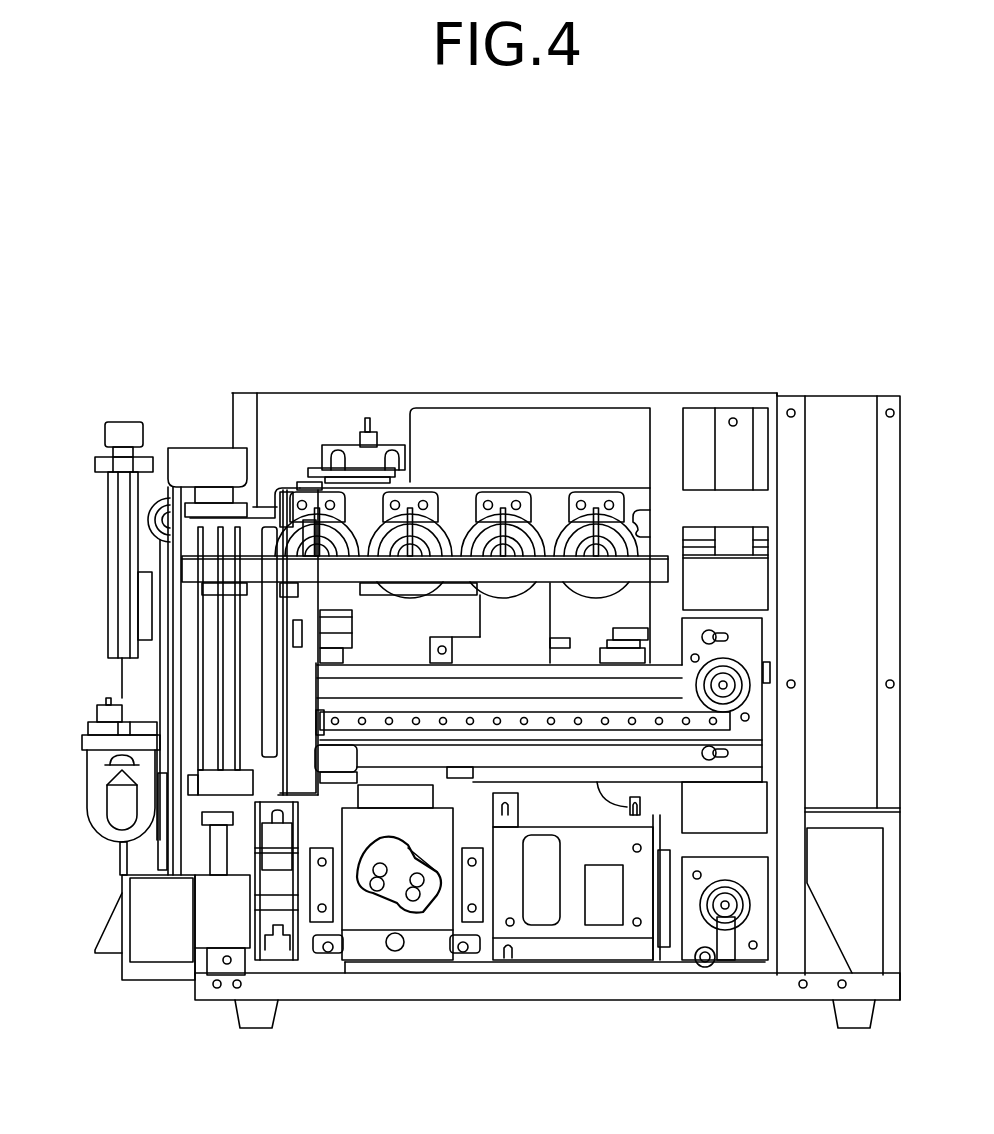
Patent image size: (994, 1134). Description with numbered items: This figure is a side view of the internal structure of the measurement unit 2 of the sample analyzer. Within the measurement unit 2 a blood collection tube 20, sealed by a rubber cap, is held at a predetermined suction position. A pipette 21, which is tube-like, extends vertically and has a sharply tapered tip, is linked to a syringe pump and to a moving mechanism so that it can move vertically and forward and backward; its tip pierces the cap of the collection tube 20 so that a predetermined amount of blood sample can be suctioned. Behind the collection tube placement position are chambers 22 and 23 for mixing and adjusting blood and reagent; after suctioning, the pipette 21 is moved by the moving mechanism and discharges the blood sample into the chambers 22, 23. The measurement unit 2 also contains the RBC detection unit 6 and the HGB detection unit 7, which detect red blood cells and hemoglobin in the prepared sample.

The measurement unit 2 is at (588, 352).
The RBC detection unit 6 is at (375, 903).
The HGB detection unit 7 is at (166, 940).
The collection tube 20 is at (215, 853).
The pipette 21 is at (215, 668).
The chamber 22 is at (279, 882).
The chamber 23 is at (542, 910).